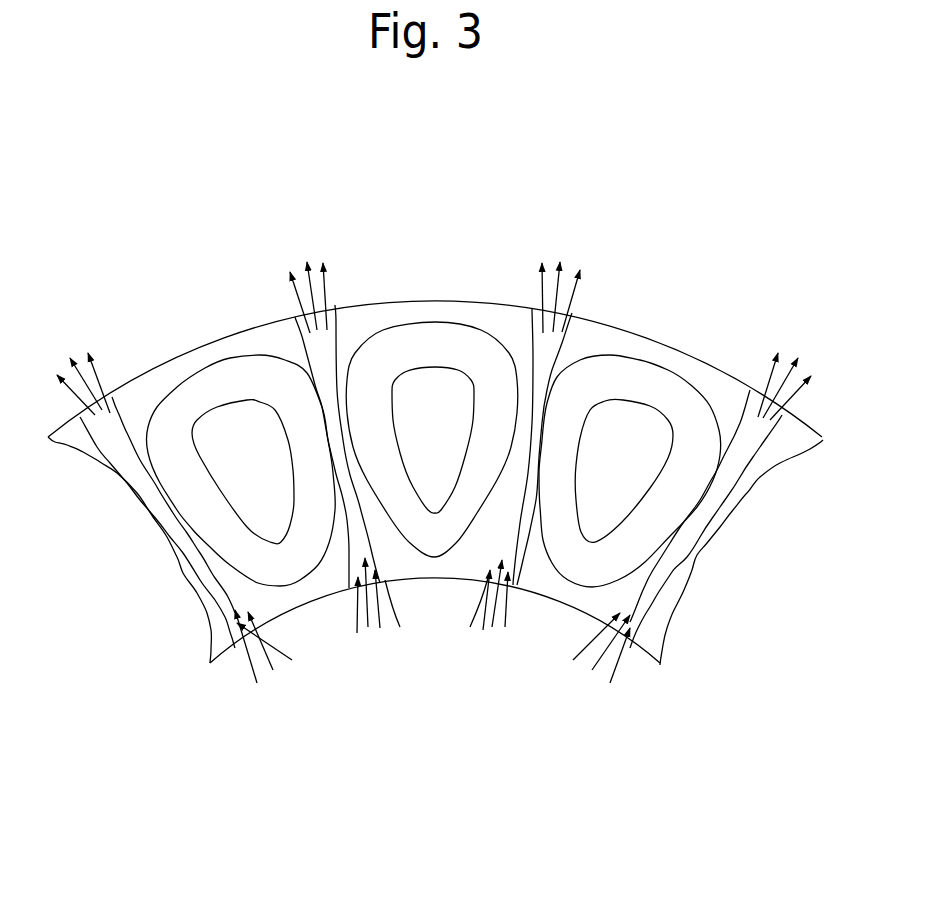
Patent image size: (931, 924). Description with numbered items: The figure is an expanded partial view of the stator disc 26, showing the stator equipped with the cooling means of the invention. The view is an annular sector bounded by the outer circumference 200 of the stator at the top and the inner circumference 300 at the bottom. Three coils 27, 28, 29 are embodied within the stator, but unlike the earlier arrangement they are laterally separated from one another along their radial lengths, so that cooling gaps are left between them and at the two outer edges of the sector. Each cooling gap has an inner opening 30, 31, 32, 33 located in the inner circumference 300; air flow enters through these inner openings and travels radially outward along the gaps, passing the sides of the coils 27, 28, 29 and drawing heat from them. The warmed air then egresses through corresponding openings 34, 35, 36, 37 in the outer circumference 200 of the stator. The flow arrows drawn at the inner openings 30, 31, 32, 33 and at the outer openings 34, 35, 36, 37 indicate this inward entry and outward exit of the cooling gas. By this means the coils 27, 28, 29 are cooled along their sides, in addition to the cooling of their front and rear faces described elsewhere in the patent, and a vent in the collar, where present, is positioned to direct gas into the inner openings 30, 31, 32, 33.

The outer circumference 200 is at (477, 300).
The inner circumference 300 is at (436, 580).
The stator disc 26 is at (245, 330).
The coil 27 is at (193, 373).
The coil 28 is at (416, 322).
The coil 29 is at (660, 362).
The inner opening 30 is at (237, 650).
The inner opening 31 is at (350, 588).
The inner opening 32 is at (514, 586).
The inner opening 33 is at (629, 650).
The opening 34 is at (110, 395).
The opening 35 is at (333, 307).
The opening 36 is at (563, 320).
The opening 37 is at (758, 393).